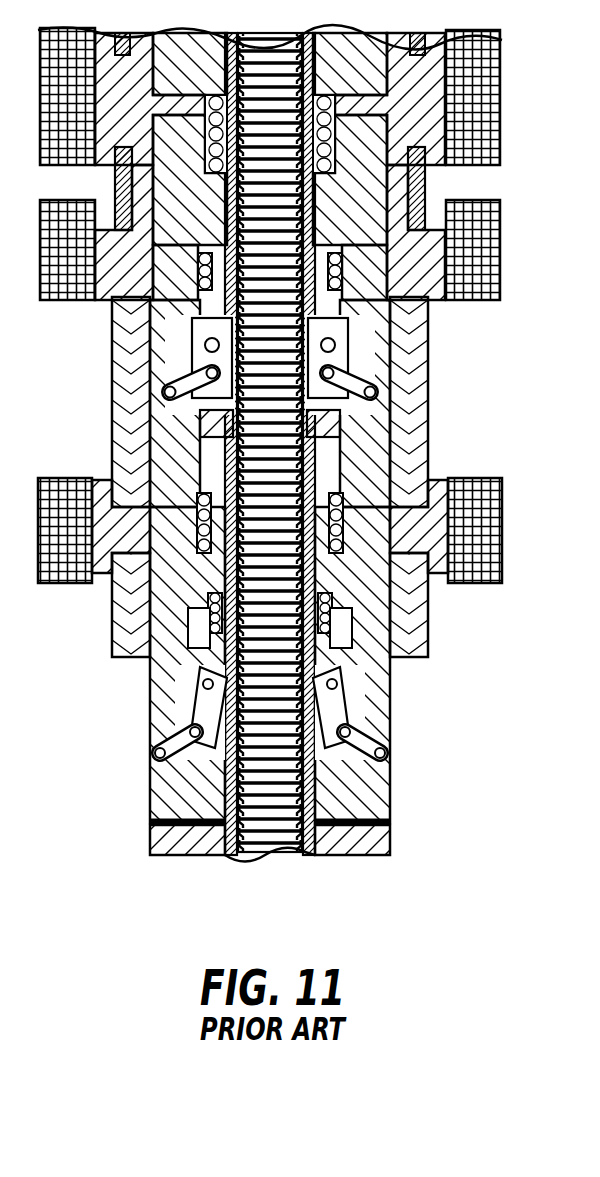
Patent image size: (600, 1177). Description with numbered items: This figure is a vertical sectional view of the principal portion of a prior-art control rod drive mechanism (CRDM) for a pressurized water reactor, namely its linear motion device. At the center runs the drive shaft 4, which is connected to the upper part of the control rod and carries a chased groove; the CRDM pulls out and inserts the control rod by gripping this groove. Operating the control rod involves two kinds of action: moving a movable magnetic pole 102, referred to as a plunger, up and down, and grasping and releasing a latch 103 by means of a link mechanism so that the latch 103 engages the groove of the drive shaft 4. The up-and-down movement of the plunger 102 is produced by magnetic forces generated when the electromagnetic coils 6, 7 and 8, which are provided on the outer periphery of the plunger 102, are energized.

The drive shaft 4 is at (262, 860).
The electromagnetic coil 6 is at (486, 104).
The electromagnetic coil 7 is at (486, 266).
The electromagnetic coil 8 is at (486, 534).
The movable magnetic pole 102 is at (365, 196).
The latch 103 is at (345, 362).